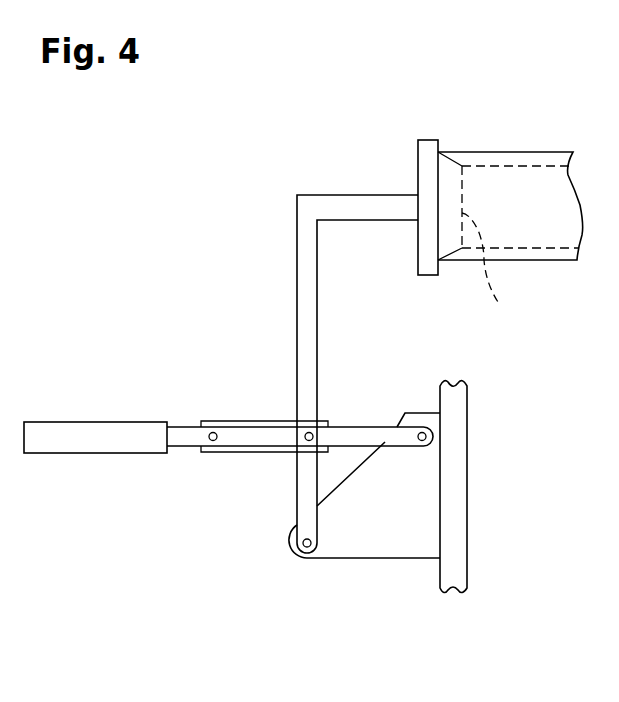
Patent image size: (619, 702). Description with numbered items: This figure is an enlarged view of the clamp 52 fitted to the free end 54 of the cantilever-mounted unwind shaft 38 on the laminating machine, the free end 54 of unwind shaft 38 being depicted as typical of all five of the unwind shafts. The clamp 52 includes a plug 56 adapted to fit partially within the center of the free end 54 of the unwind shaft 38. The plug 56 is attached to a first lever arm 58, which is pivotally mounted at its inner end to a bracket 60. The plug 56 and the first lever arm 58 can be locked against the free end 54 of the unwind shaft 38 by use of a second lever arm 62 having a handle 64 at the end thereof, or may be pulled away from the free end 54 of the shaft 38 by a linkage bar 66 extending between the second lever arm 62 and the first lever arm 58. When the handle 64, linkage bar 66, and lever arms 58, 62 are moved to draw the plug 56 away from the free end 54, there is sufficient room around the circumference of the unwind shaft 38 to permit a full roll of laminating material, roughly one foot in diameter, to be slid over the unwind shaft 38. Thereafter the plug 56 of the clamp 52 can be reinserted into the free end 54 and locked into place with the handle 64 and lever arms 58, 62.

The unwind shaft 38 is at (555, 150).
The free end 54 is at (478, 150).
The plug 56 is at (489, 273).
The first lever arm 58 is at (297, 268).
The linkage bar 66 is at (230, 420).
The handle 64 is at (80, 453).
The second lever arm 62 is at (183, 447).
The bracket 60 is at (366, 558).
The clamp 52 is at (320, 572).